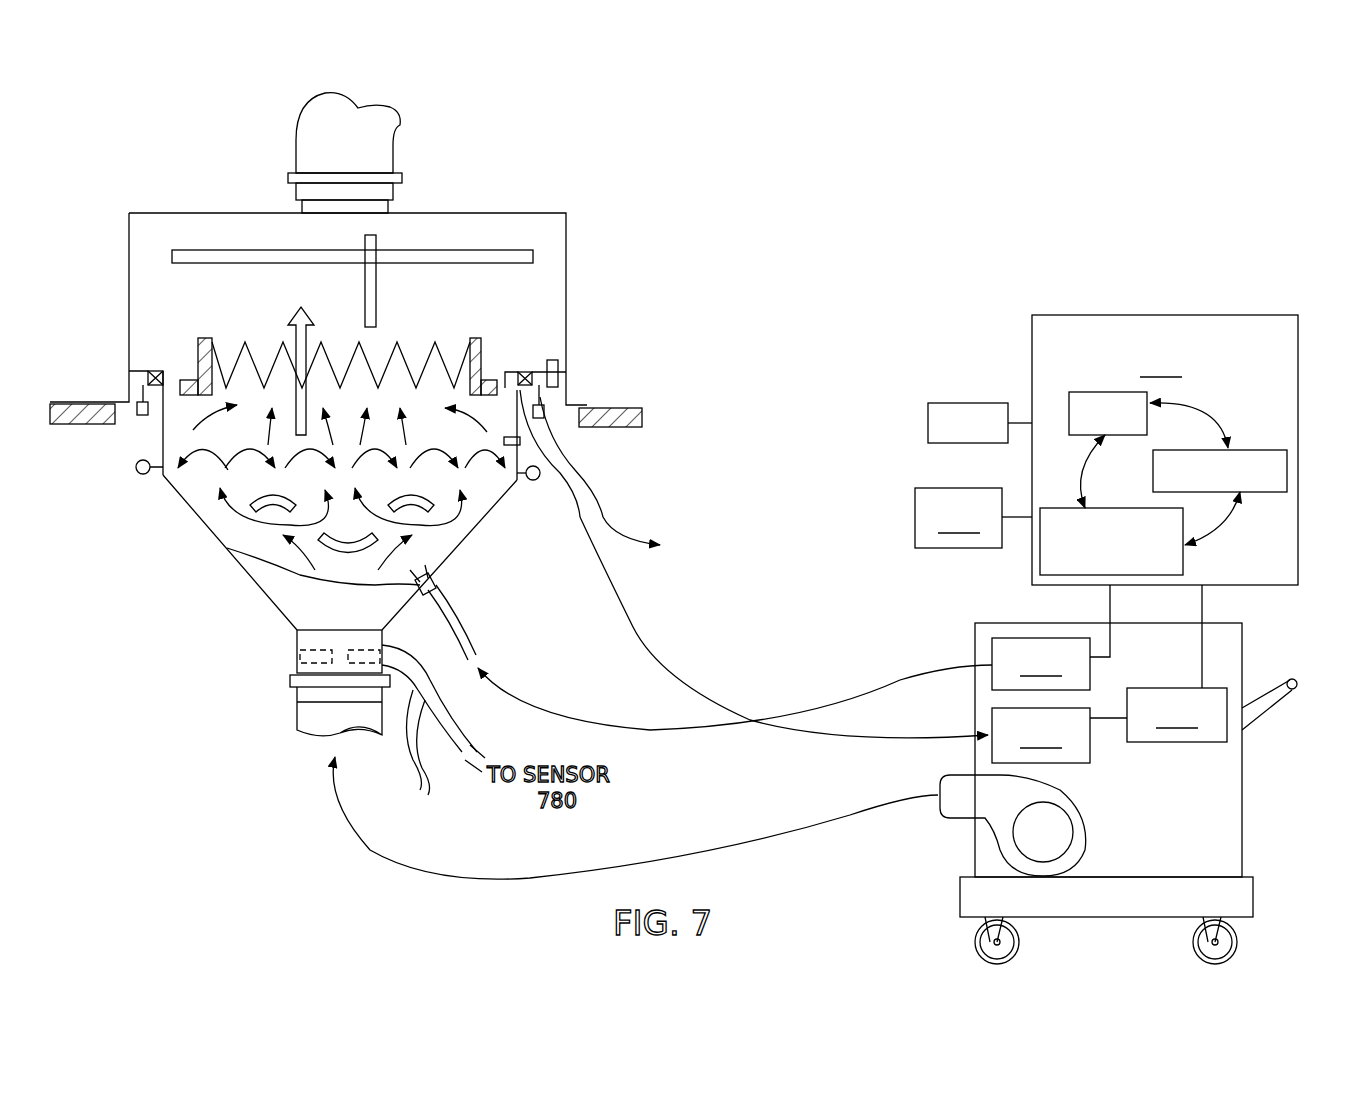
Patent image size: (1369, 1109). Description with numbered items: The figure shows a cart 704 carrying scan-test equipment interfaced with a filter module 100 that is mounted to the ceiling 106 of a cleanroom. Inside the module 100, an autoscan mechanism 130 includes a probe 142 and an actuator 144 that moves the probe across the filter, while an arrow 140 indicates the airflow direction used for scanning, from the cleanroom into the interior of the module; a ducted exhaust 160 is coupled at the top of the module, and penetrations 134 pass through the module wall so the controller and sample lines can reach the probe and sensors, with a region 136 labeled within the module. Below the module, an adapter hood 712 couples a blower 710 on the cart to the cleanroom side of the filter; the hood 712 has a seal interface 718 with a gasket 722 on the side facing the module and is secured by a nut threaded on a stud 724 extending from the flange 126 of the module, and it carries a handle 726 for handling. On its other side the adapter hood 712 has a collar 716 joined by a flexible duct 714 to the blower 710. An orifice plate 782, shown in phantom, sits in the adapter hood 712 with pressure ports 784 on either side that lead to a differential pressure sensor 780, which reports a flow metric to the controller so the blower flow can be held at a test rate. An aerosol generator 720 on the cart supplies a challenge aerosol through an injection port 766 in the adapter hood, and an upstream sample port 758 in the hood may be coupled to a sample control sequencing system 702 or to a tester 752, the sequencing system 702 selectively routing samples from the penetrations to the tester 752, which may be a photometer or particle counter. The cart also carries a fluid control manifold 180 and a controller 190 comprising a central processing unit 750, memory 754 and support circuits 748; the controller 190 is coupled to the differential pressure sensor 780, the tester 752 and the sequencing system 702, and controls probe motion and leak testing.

The filter module 100 is at (462, 145).
The ducted exhaust 160 is at (306, 135).
The autoscan mechanism 130 is at (351, 230).
The actuator 144 is at (483, 262).
The probe 142 is at (365, 305).
The arrow 140 is at (300, 318).
The processing region 136 is at (612, 662).
The handle 726 is at (136, 470).
The gasket 722 is at (520, 372).
The stud 724 is at (548, 392).
The penetrations 134 is at (569, 377).
The flange 126 is at (540, 372).
The seal interface 718 is at (522, 445).
The sample port 758 is at (540, 483).
The ceiling 106 is at (80, 425).
The adapter hood 712 is at (197, 516).
The collar 716 is at (283, 633).
The orifice plate 782 is at (312, 650).
The flexible duct 714 is at (305, 720).
The pressure ports 784 is at (429, 729).
The injection port 766 is at (440, 583).
The cart 704 is at (680, 680).
The aerosol generator 720 is at (794, 657).
The sample control sequencing system 702 is at (1059, 735).
The tester 752 is at (1177, 663).
The blower 710 is at (1087, 805).
The controller 190 is at (1158, 444).
The central processing unit 750 is at (1090, 392).
The memory 754 is at (1265, 450).
The support circuits 748 is at (1183, 565).
The differential pressure sensor 780 is at (928, 423).
The fluid control manifold 180 is at (973, 518).